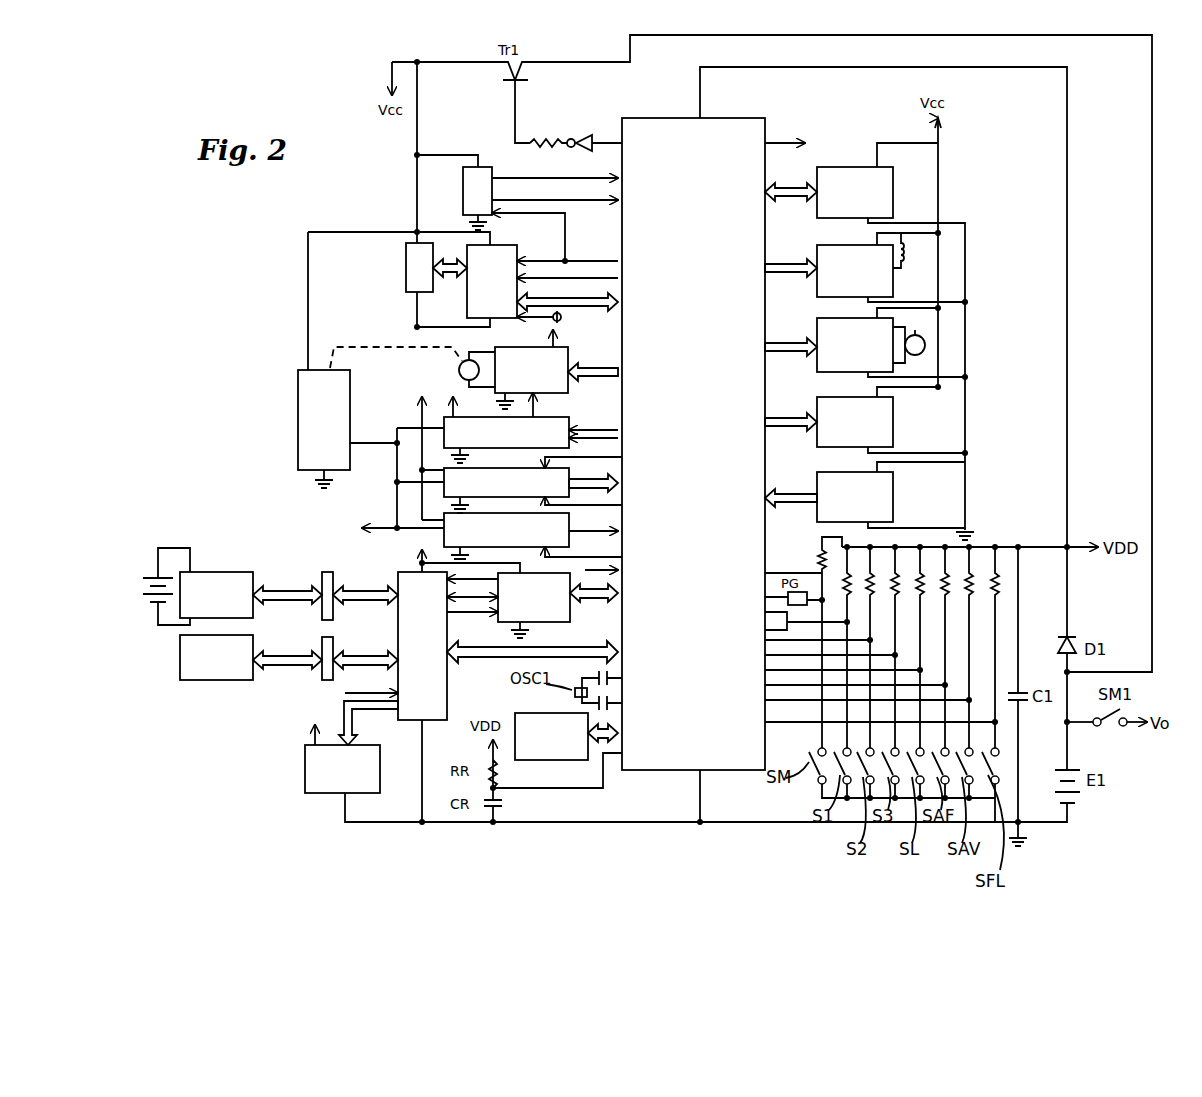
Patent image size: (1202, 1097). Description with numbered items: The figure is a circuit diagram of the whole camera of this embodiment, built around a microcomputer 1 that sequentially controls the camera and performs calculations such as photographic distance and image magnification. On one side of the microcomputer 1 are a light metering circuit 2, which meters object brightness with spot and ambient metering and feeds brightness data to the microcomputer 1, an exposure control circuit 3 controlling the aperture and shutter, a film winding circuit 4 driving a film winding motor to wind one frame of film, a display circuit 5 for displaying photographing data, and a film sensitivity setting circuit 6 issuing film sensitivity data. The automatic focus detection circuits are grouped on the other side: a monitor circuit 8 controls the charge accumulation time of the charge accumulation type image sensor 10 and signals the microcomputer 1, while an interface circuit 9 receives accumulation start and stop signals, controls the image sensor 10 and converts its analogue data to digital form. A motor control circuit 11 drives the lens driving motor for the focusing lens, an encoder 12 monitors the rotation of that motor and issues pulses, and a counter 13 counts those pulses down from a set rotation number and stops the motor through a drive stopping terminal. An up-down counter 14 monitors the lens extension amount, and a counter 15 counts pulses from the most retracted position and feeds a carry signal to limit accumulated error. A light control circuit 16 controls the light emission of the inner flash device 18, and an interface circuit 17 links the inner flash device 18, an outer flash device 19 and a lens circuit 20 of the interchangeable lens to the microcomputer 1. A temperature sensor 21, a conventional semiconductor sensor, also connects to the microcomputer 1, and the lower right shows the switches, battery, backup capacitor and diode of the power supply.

The microcomputer 1 is at (757, 118).
The light metering circuit 2 is at (852, 167).
The exposure control circuit 3 is at (893, 292).
The film winding circuit 4 is at (817, 318).
The display circuit 5 is at (893, 422).
The film sensitivity setting circuit 6 is at (893, 498).
The monitor circuit 8 is at (463, 195).
The interface circuit 9 is at (517, 257).
The CCD 10 is at (406, 268).
The motor control circuit 11 is at (568, 389).
The encoder 12 is at (298, 385).
The counter 13 is at (569, 422).
The up-down counter 14 is at (569, 479).
The counter 15 is at (569, 530).
The light control circuit 16 is at (570, 618).
The interface circuit INF2 17 is at (447, 685).
The inner FL device 18 is at (380, 770).
The outer FL device 19 is at (222, 572).
The lens circuit 20 is at (225, 682).
The temperature sensor 21 is at (557, 760).